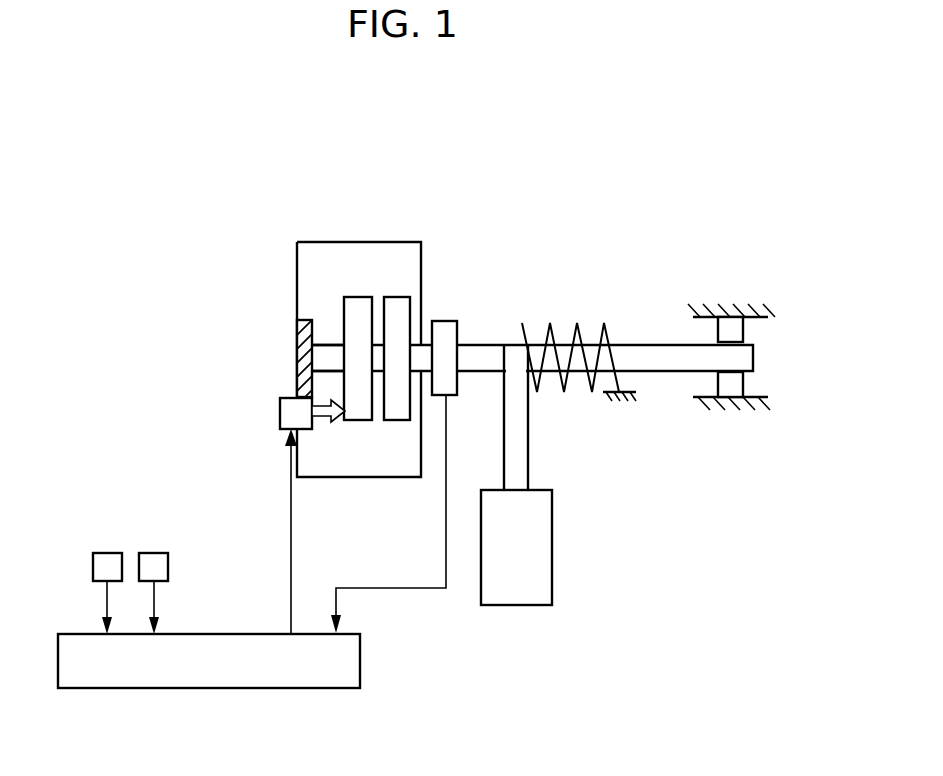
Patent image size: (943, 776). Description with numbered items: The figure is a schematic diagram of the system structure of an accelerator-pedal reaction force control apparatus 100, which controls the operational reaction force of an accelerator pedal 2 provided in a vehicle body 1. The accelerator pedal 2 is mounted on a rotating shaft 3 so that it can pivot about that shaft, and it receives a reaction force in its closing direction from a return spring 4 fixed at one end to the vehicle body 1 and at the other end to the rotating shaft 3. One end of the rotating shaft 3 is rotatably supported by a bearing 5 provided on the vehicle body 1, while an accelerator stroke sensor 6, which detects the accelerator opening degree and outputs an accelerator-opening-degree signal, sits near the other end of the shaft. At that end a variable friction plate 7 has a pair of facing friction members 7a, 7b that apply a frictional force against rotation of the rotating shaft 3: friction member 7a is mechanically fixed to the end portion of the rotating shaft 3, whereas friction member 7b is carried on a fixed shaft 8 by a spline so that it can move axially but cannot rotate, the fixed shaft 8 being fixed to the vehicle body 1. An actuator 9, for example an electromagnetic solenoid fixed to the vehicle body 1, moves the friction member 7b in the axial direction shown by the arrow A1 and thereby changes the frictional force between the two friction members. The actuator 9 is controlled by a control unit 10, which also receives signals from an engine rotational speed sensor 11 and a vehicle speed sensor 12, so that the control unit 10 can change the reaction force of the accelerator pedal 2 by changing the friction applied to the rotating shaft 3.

The accelerator-pedal reaction force control apparatus 100 is at (566, 180).
The vehicle body 1 is at (300, 353).
The accelerator pedal 2 is at (558, 472).
The rotating shaft 3 is at (650, 352).
The return spring 4 is at (554, 328).
The bearing 5 is at (737, 382).
The accelerator stroke sensor 6 is at (447, 327).
The variable friction plate 7 is at (388, 482).
The friction member 7a is at (400, 303).
The friction member 7b is at (358, 303).
The fixed shaft 8 is at (330, 352).
The actuator 9 is at (290, 417).
The control unit 10 is at (362, 661).
The engine rotational speed sensor 11 is at (108, 560).
The vehicle speed sensor 12 is at (154, 560).
The arrow A1 is at (333, 421).